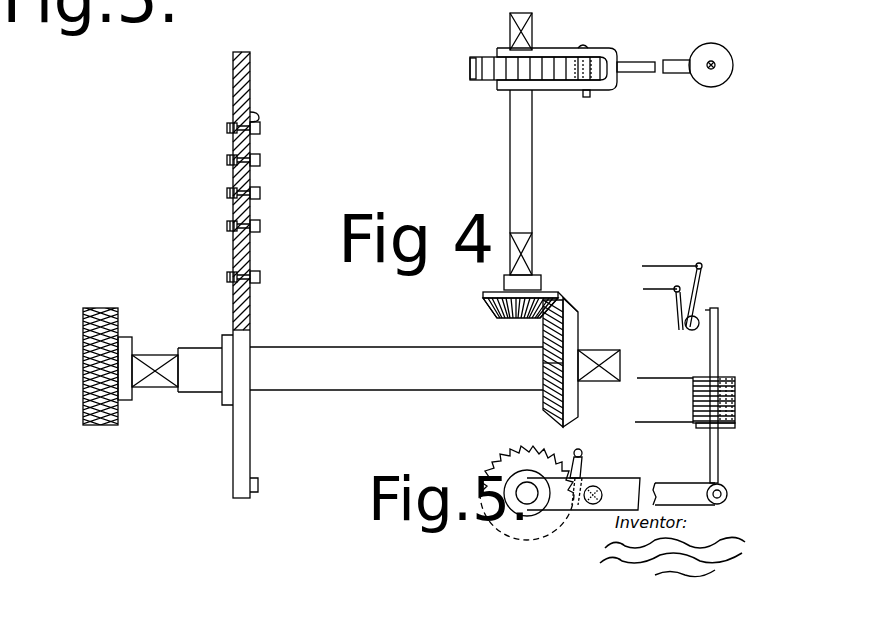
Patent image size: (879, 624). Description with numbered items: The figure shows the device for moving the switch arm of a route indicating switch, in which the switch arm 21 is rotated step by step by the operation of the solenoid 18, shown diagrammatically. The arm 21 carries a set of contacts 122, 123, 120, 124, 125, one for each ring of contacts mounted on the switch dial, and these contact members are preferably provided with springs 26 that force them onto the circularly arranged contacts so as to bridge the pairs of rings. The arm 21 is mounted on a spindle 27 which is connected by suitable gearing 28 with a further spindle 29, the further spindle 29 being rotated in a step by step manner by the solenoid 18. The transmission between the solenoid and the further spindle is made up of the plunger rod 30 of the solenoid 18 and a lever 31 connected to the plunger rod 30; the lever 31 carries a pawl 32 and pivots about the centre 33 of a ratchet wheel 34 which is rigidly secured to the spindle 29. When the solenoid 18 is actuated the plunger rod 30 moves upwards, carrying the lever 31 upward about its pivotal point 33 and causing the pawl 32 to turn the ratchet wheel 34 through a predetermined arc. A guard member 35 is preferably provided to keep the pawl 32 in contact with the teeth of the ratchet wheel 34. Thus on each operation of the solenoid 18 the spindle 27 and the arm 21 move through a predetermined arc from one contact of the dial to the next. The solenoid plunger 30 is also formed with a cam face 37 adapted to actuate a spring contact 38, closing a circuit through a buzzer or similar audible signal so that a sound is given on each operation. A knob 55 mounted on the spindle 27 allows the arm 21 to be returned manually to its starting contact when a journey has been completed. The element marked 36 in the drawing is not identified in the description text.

In FIG. 4, the solenoid 18 is at (716, 86).
In FIG. 5, the solenoid 18 is at (700, 392).
In FIG. 4, the arm 21 is at (237, 458).
In FIG. 4, the springs 26 is at (240, 203).
In FIG. 4, the spindle 27 is at (376, 398).
In FIG. 4, the gearing 28 is at (572, 345).
In FIG. 4, the further spindle 29 is at (533, 190).
In FIG. 5, the plunger rod 30 is at (712, 470).
In FIG. 4, the lever 31 is at (672, 91).
In FIG. 5, the lever 31 is at (657, 492).
In FIG. 4, the pawl 32 is at (636, 48).
In FIG. 5, the centre 33 is at (535, 510).
In FIG. 4, the ratchet wheel 34 is at (470, 70).
In FIG. 5, the ratchet wheel 34 is at (512, 520).
In FIG. 4, the guard member 35 is at (565, 88).
In FIG. 5, the pawl 36 is at (582, 453).
In FIG. 5, the cam face 37 is at (706, 310).
In FIG. 5, the spring contact 38 is at (685, 321).
In FIG. 4, the knob 55 is at (83, 358).
In FIG. 4, the contact 120 is at (228, 197).
In FIG. 4, the contact 122 is at (230, 121).
In FIG. 4, the contact 123 is at (228, 163).
In FIG. 4, the contact 124 is at (228, 232).
In FIG. 4, the contact 125 is at (228, 276).